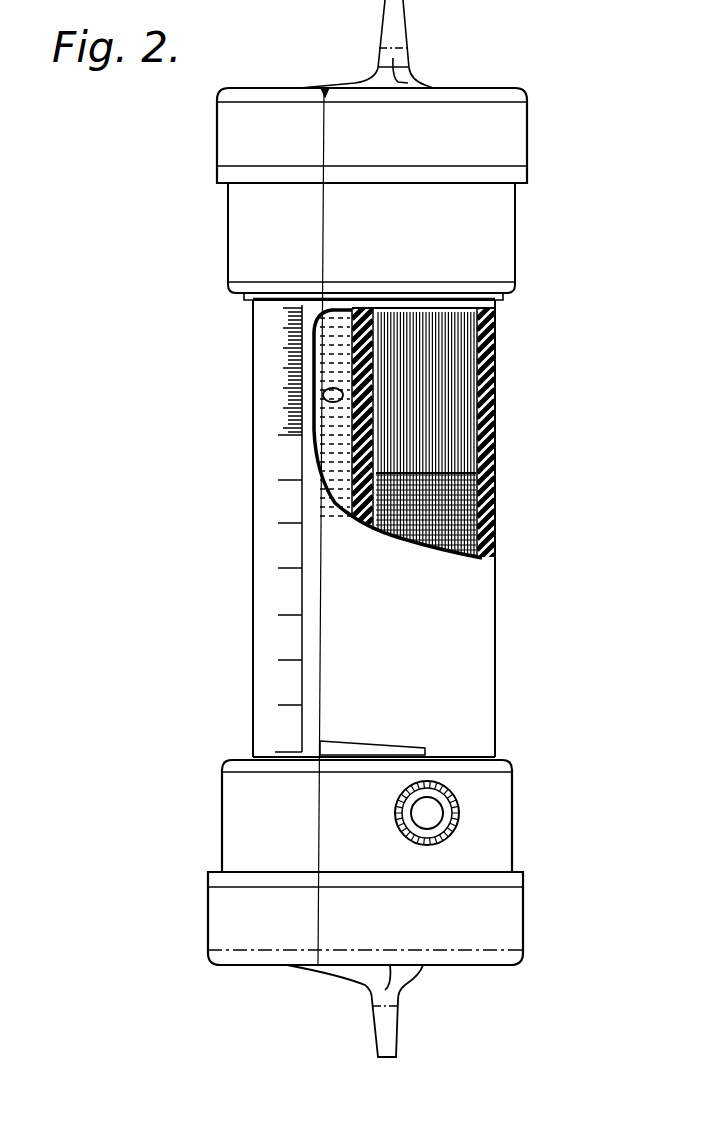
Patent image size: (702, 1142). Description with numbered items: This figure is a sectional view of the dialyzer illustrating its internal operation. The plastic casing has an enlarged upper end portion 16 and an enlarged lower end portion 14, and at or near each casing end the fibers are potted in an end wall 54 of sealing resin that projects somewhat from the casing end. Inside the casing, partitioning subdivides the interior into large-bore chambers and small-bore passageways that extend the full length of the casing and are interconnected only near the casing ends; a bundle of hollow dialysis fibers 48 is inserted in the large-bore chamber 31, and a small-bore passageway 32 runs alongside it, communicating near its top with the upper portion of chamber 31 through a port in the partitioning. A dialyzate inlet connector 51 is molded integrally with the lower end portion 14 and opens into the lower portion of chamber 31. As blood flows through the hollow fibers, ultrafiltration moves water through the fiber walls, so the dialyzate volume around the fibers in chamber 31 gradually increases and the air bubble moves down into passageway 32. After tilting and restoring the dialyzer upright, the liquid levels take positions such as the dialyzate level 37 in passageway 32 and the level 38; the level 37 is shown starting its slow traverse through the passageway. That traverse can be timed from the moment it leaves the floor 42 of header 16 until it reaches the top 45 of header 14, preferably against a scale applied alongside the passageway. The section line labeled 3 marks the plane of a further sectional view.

The end wall 54 is at (513, 122).
The upper enlarged casing end portion 16 is at (493, 207).
The section line 3- 3 is at (555, 268).
The floor of header 42 is at (505, 283).
The dialyzate level 37 is at (325, 359).
The small-bore passageway 32 is at (330, 395).
The bundle of hollow dialysis fibers 48 is at (463, 368).
The liquid level 38 is at (497, 472).
The large-bore chamber 31 is at (497, 513).
The enlarged lower end portion 14 is at (247, 803).
The top of header 45 is at (487, 770).
The dialyzate inlet connector 51 is at (459, 813).